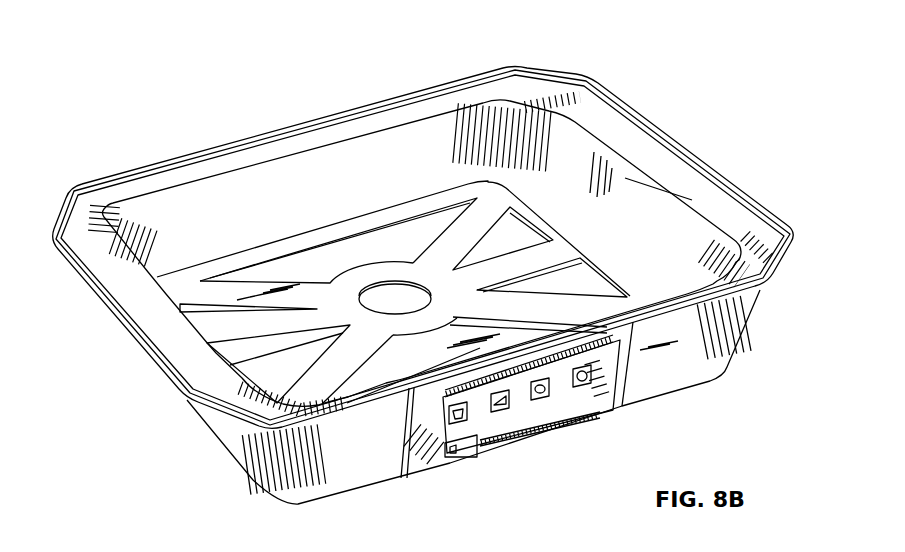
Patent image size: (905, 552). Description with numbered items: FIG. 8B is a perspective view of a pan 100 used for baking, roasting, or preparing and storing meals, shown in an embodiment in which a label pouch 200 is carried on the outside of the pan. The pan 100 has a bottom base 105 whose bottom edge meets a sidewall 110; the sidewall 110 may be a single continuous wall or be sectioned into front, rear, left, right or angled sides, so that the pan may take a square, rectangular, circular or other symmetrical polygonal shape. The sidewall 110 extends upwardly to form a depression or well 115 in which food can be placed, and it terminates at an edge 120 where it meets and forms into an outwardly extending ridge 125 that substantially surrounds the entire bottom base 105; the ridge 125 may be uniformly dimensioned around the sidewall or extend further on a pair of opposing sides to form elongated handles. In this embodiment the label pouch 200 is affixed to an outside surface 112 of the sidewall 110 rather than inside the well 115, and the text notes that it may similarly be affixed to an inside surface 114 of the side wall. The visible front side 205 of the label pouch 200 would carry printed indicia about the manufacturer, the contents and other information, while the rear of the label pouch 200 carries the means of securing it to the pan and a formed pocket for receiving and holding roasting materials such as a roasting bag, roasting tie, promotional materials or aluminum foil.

The pan 100 is at (593, 113).
The bottom base 105 is at (601, 272).
The sidewall 110 is at (664, 383).
The outside surface 112 is at (350, 452).
The inside surface 114 is at (234, 187).
The well 115 is at (396, 153).
The edge 120 is at (176, 179).
The ridge 125 is at (102, 276).
The label pouch 200 is at (407, 440).
The front side 205 is at (424, 458).